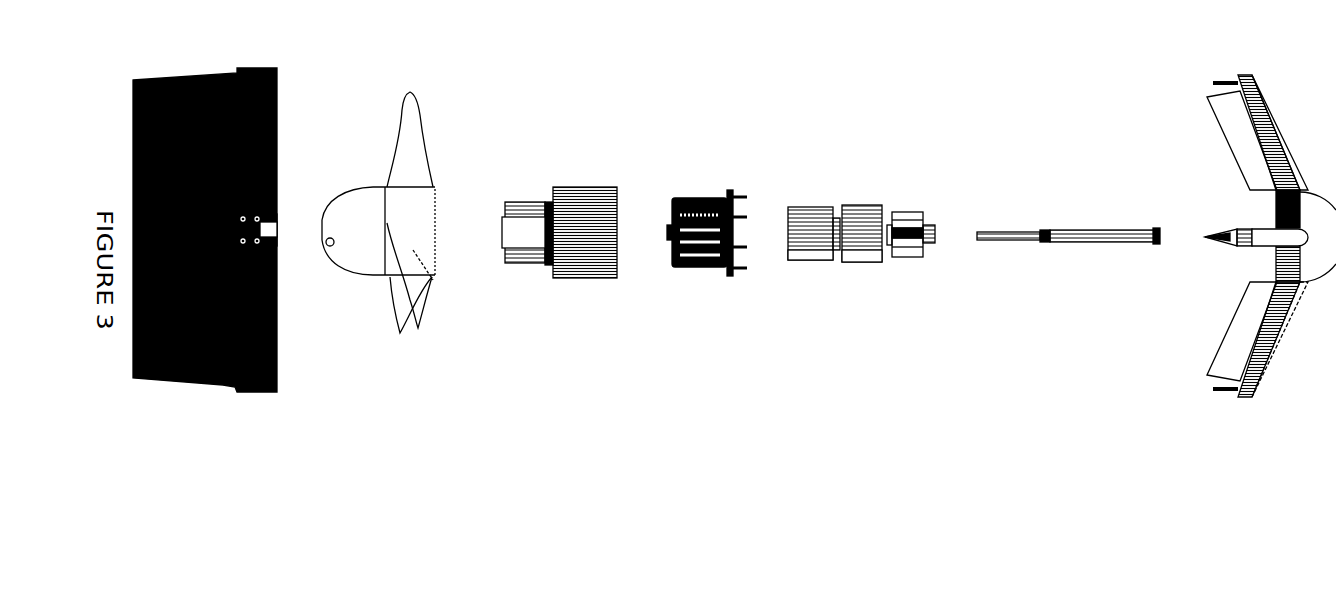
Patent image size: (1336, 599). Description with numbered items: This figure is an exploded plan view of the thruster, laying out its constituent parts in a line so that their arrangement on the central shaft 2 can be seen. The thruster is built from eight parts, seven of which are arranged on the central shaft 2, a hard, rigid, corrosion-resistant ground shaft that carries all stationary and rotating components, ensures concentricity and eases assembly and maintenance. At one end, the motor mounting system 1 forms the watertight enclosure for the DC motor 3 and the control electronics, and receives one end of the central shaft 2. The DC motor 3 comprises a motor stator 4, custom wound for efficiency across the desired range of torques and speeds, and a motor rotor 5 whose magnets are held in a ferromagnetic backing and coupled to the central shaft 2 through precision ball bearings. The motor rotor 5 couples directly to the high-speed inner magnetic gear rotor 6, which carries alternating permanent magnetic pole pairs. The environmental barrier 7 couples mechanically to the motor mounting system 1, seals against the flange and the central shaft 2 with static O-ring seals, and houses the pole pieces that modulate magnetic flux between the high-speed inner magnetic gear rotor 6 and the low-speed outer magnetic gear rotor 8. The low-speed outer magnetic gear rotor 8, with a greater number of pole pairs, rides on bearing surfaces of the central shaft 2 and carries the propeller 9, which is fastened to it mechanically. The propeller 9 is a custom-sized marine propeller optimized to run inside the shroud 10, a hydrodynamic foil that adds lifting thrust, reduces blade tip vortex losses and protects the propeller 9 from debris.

The motor mounting system 1 is at (1263, 393).
The central shaft 2 is at (1059, 248).
The DC motor 3 is at (883, 188).
The motor stator 4 is at (910, 257).
The motor rotor 5 is at (860, 262).
The high-speed inner magnetic gear rotor 6 is at (812, 255).
The environmental barrier 7 is at (702, 267).
The low-speed outer magnetic gear rotor 8 is at (580, 278).
The propeller 9 is at (370, 262).
The shroud 10 is at (222, 387).